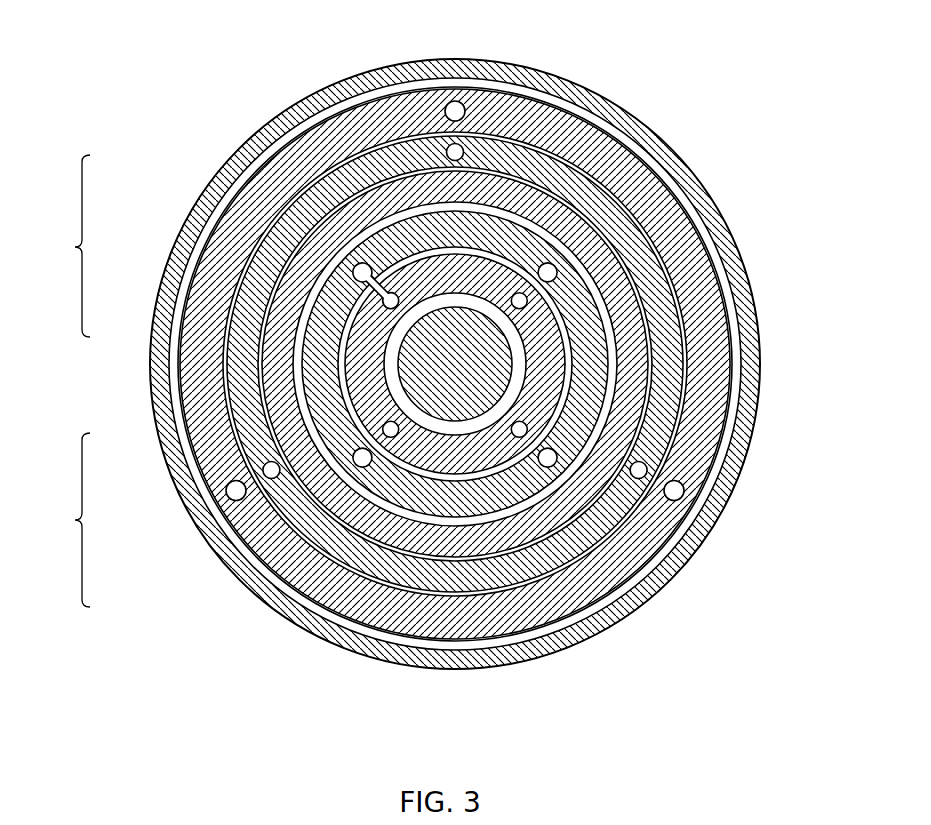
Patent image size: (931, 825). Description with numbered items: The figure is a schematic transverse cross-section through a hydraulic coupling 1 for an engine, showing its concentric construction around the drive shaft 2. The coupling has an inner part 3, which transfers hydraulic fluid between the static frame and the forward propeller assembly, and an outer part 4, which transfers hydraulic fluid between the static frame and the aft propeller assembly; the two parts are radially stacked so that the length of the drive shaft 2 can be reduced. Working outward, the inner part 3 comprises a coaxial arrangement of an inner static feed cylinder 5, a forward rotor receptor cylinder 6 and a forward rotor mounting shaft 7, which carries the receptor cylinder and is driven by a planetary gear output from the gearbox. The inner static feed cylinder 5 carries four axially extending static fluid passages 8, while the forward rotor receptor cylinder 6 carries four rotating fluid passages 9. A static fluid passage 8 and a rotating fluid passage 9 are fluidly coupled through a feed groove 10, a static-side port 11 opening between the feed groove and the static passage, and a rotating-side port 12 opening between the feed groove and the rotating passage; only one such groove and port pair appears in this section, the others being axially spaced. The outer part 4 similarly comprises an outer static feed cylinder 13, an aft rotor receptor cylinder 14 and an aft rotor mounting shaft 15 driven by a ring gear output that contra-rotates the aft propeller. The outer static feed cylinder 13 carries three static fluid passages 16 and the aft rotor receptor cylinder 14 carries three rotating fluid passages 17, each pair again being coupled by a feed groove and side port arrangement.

The hydraulic coupling 1 is at (230, 133).
The drive shaft 2 is at (330, 577).
The inner part 3 is at (72, 520).
The outer part 4 is at (72, 246).
The inner static feed cylinder 5 is at (362, 370).
The forward rotor receptor cylinder 6 is at (224, 495).
The forward rotor mounting shaft 7 is at (268, 498).
The static fluid passage 8 is at (557, 274).
The rotating fluid passage 9 is at (648, 250).
The feed groove 10 is at (565, 374).
The static-side port 11 is at (387, 288).
The rotating-side port 12 is at (366, 265).
The outer static feed cylinder 13 is at (283, 238).
The aft rotor receptor cylinder 14 is at (215, 270).
The aft rotor mounting shaft 15 is at (165, 328).
The static fluid passage 16 is at (640, 481).
The rotating fluid passage 17 is at (684, 496).